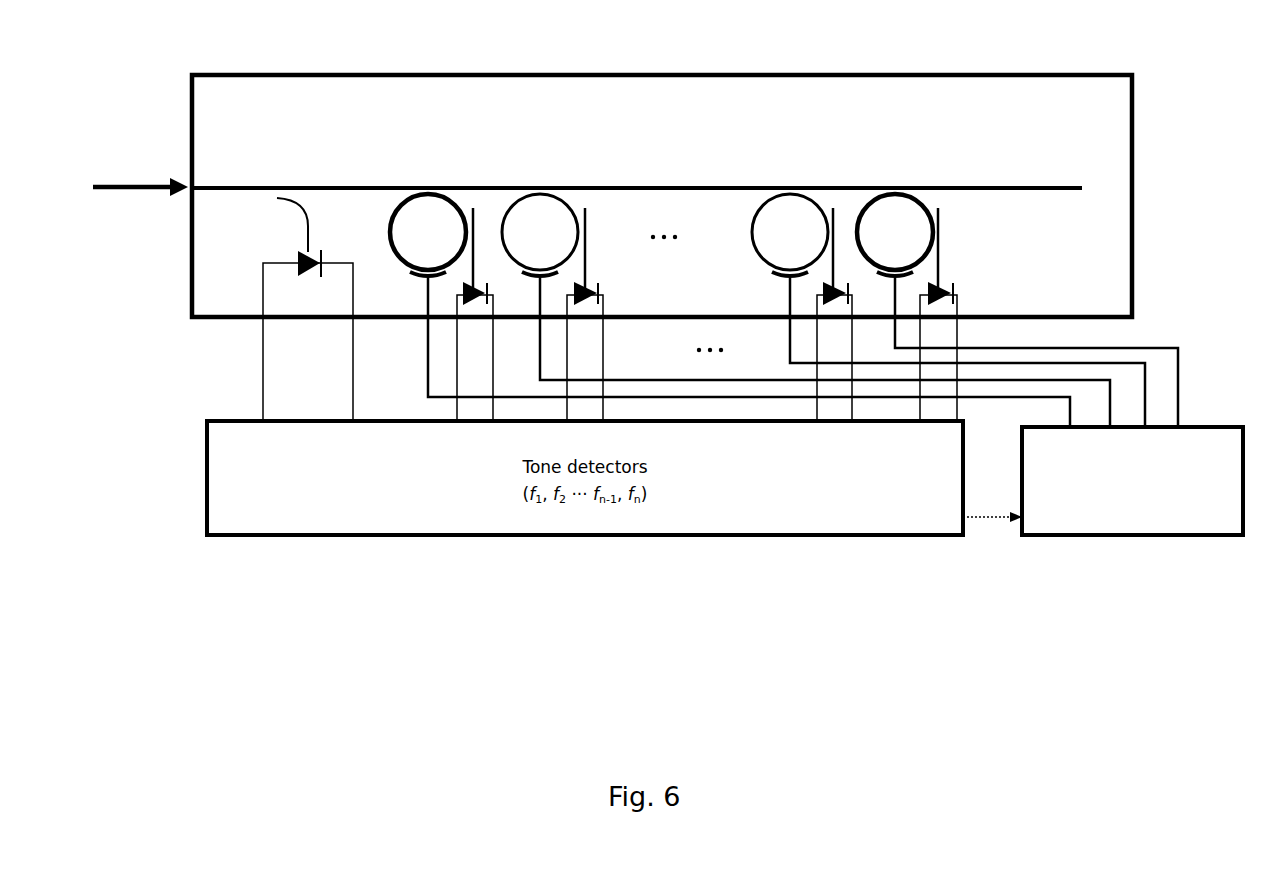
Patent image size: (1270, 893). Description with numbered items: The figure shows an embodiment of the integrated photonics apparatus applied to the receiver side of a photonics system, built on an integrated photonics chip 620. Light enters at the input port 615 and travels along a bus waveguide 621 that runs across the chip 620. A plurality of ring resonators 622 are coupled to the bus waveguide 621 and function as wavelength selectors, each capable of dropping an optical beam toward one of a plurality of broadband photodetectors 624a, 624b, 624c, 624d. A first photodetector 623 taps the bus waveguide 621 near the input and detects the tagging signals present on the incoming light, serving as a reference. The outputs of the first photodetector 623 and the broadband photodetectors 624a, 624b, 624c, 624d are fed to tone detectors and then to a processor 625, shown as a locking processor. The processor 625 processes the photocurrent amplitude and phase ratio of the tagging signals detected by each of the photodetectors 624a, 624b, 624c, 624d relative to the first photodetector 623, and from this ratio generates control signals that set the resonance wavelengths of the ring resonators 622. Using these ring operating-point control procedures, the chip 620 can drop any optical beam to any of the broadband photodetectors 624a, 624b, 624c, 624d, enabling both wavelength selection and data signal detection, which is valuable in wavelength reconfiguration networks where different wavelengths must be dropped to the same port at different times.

The input port 615 is at (124, 193).
The chip 620 is at (742, 86).
The bus waveguide 621 is at (358, 188).
The ring resonators 622 is at (462, 197).
The first photodetector 623 is at (313, 266).
The broadband photodetector 624a is at (478, 302).
The broadband photodetector 624b is at (592, 302).
The broadband photodetector 624c is at (832, 302).
The broadband photodetector 624d is at (940, 300).
The processor 625 is at (1127, 528).